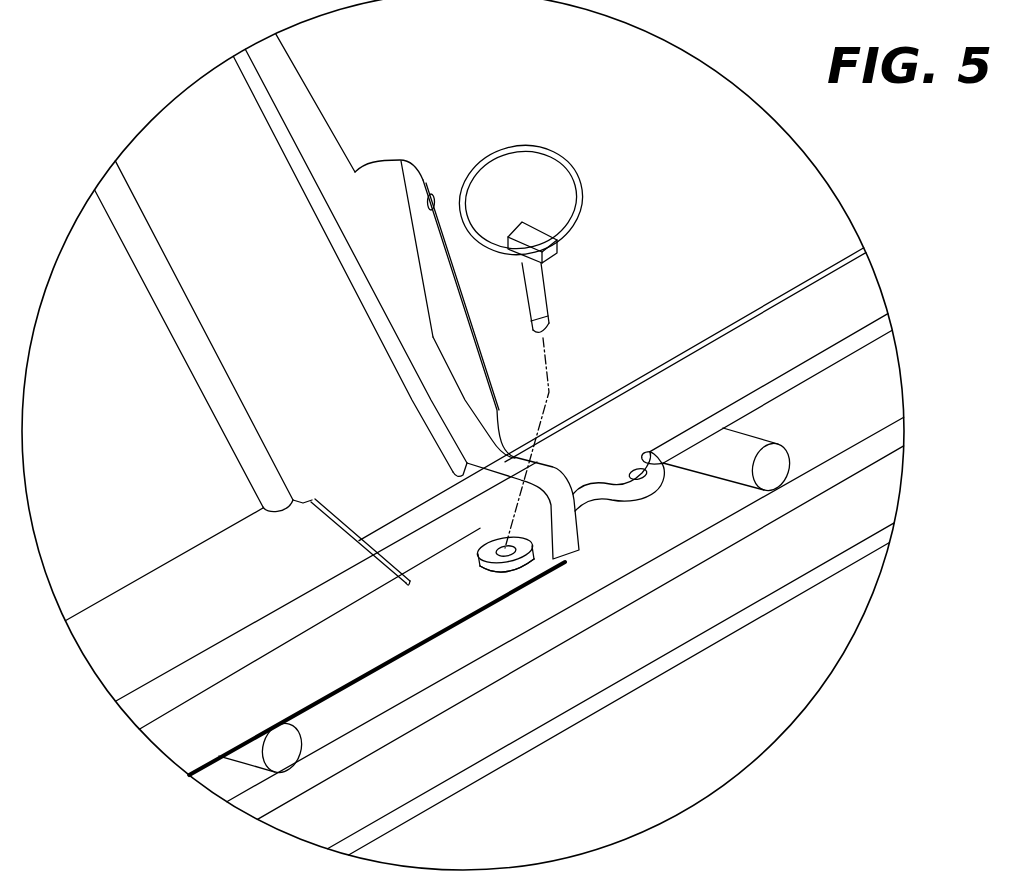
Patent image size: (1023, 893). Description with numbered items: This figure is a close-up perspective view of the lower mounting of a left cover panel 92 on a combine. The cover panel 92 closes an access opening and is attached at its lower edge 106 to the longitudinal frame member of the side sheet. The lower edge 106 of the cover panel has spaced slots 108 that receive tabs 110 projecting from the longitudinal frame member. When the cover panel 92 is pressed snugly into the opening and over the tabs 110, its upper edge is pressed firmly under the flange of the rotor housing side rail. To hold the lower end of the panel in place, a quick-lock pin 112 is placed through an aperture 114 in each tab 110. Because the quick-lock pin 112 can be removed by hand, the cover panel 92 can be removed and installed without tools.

The left cover panel 92 is at (130, 385).
The lower edge 106 is at (368, 657).
The slot 108 is at (484, 578).
The tab 110 is at (657, 490).
The quick-lock pin 112 is at (544, 291).
The aperture 114 is at (547, 463).